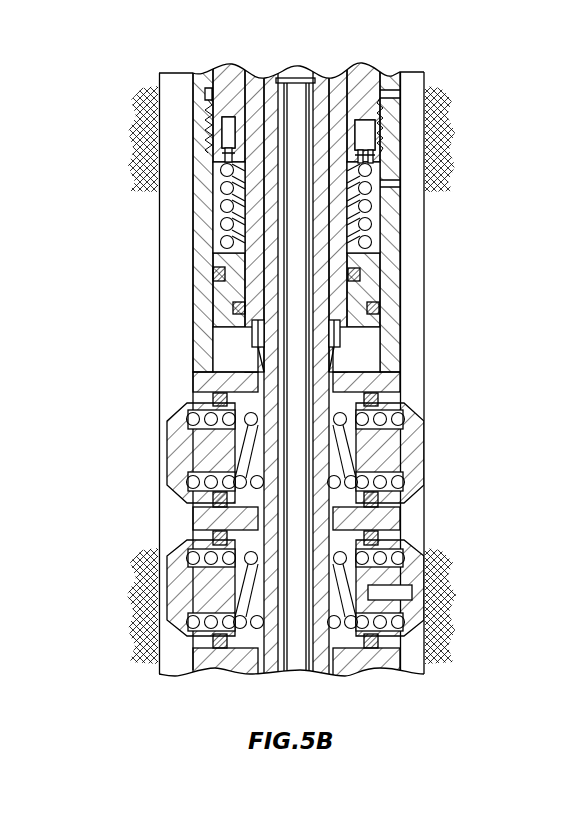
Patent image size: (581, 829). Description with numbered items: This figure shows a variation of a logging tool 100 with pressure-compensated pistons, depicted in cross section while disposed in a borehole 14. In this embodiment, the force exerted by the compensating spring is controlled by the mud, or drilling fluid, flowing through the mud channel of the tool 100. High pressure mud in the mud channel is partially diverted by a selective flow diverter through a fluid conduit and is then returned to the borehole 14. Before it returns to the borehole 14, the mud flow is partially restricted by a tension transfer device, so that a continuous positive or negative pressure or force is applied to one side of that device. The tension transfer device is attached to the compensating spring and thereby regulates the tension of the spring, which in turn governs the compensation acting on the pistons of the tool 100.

The tool 100 is at (410, 140).
The borehole 14 is at (412, 172).